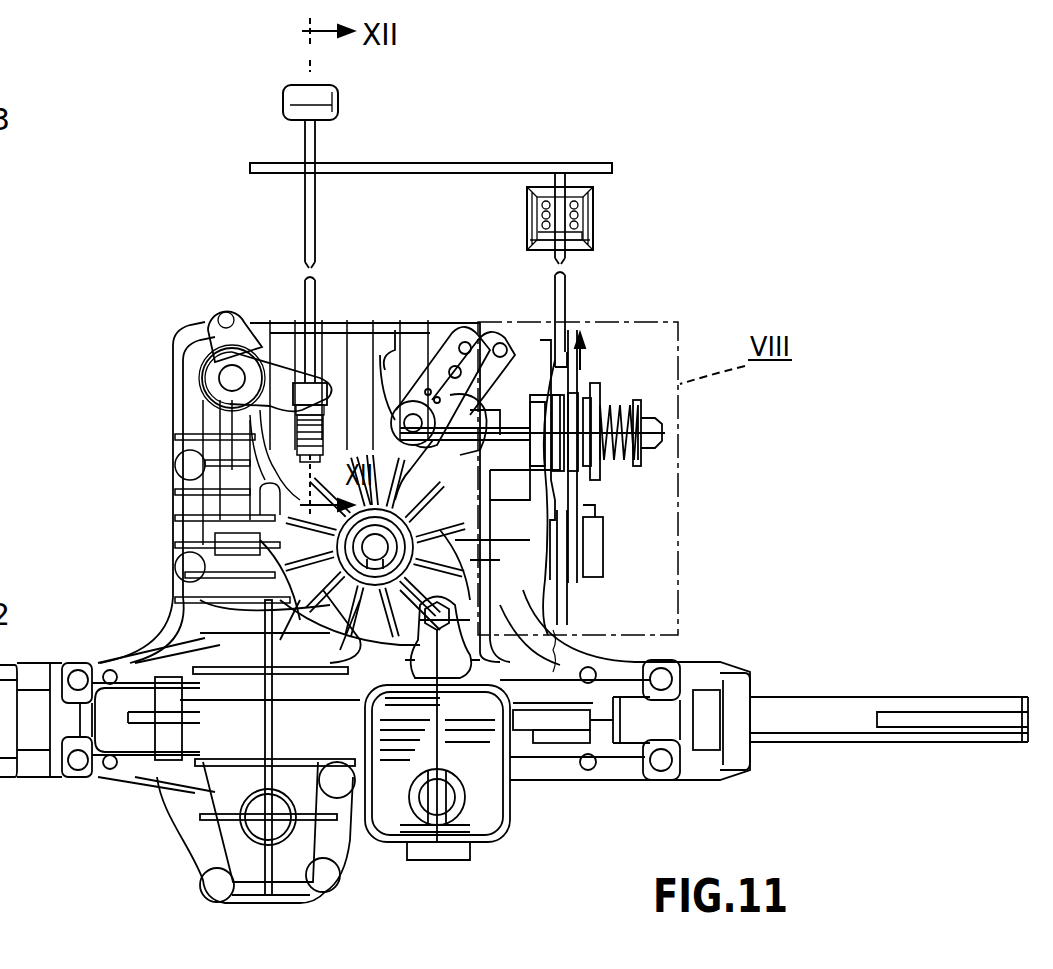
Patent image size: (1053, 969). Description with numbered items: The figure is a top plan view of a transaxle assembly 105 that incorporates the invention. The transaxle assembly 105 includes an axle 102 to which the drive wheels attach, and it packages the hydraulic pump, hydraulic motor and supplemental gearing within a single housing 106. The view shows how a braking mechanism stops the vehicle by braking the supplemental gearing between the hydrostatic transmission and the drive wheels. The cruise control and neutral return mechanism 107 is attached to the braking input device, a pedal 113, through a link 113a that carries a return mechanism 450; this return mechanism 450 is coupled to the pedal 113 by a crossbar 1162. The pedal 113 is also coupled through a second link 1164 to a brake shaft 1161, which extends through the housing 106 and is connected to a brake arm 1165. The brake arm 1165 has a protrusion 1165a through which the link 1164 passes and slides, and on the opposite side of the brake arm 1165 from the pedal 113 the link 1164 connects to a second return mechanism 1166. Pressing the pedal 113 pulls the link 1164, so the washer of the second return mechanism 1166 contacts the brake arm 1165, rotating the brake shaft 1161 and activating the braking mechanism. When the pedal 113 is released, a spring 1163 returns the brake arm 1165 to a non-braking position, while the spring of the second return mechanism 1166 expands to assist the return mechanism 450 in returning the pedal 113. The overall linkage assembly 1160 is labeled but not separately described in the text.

The axle 102 is at (832, 712).
The transaxle assembly 105 is at (145, 462).
The housing 106 is at (178, 532).
The cruise control and neutral return mechanism 107 is at (640, 368).
The pedal 113 is at (290, 102).
The link 113a is at (560, 310).
The return mechanism 450 is at (615, 213).
The shift linkage assembly 1160 is at (672, 135).
The brake shaft 1161 is at (232, 376).
The crossbar 1162 is at (445, 163).
The spring 1163 is at (202, 357).
The second link 1164 is at (308, 212).
The brake arm 1165 is at (273, 375).
The protrusion 1165a is at (330, 395).
The second return mechanism 1166 is at (300, 433).